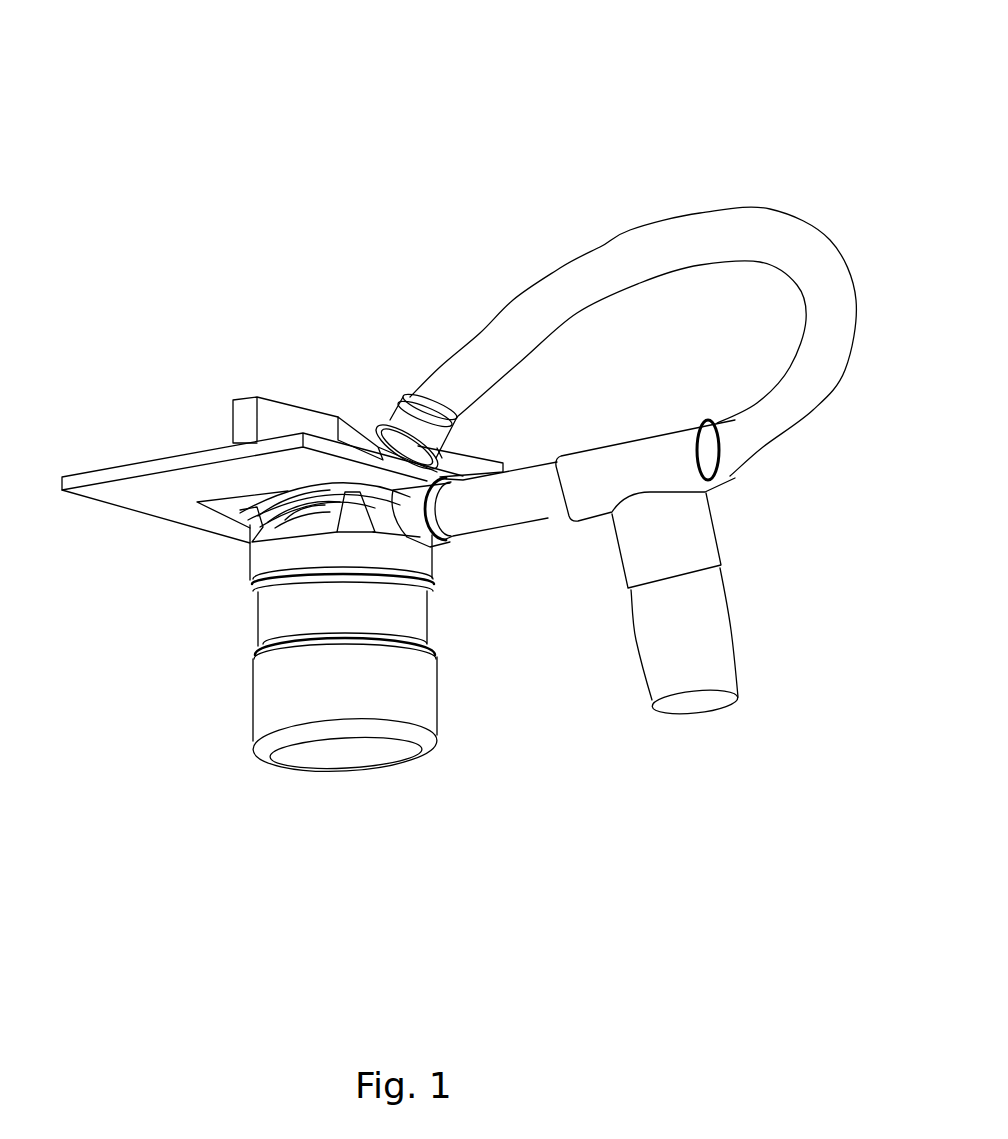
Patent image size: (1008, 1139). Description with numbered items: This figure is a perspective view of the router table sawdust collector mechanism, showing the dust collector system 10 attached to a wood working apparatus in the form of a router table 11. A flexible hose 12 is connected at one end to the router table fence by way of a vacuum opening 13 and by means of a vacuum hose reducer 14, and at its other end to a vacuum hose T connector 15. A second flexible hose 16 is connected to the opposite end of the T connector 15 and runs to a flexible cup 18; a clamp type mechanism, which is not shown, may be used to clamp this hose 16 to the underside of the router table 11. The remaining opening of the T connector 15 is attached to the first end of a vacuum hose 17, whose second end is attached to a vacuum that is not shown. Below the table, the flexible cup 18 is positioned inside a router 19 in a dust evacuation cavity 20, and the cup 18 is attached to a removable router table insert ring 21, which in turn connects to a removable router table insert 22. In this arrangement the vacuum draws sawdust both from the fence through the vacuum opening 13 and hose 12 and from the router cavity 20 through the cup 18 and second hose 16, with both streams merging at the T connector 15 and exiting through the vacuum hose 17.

The dust collector system 10 is at (443, 122).
The router table 11 is at (88, 483).
The flexible hose 12 is at (600, 274).
The vacuum opening 13 is at (368, 433).
The vacuum hose reducer 14 is at (422, 405).
The vacuum hose T connector 15 is at (662, 532).
The second flexible hose 16 is at (510, 508).
The vacuum hose 17 is at (692, 655).
The flexible cup 18 is at (247, 543).
The router 19 is at (403, 697).
The dust evacuation cavity 20 is at (307, 533).
The removable router table insert ring 21 is at (248, 516).
The removable router table insert 22 is at (238, 509).